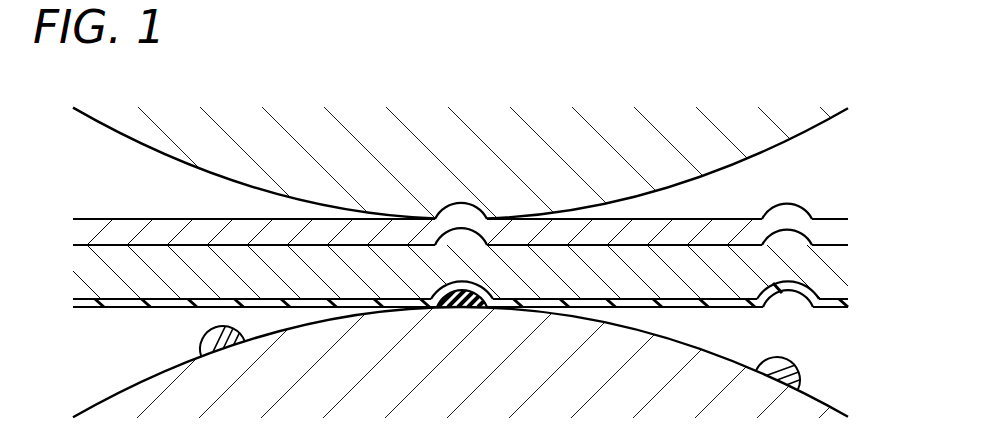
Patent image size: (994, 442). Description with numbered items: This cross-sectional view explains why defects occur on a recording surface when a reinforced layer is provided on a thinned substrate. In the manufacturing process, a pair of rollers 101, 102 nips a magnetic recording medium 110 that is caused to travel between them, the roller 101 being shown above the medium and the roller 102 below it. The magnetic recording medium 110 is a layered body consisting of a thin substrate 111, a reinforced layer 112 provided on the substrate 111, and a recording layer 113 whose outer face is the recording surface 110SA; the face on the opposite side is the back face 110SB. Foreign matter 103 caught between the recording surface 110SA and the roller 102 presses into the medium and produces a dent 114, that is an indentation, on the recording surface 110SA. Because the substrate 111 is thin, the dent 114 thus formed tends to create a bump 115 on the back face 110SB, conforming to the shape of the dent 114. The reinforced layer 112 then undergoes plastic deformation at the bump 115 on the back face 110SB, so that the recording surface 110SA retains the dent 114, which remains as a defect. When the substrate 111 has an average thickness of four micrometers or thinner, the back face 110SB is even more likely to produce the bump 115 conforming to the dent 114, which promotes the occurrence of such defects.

The roller 101 is at (799, 124).
The roller 102 is at (808, 407).
The foreign matter 103 is at (212, 341).
The magnetic recording medium 110 is at (498, 275).
The back face 110SB is at (672, 216).
The recording surface 110SA is at (668, 311).
The substrate 111 is at (846, 276).
The reinforced layer 112 is at (496, 205).
The recording layer 113 is at (496, 336).
The dent 114 is at (474, 311).
The bump 115 is at (449, 201).